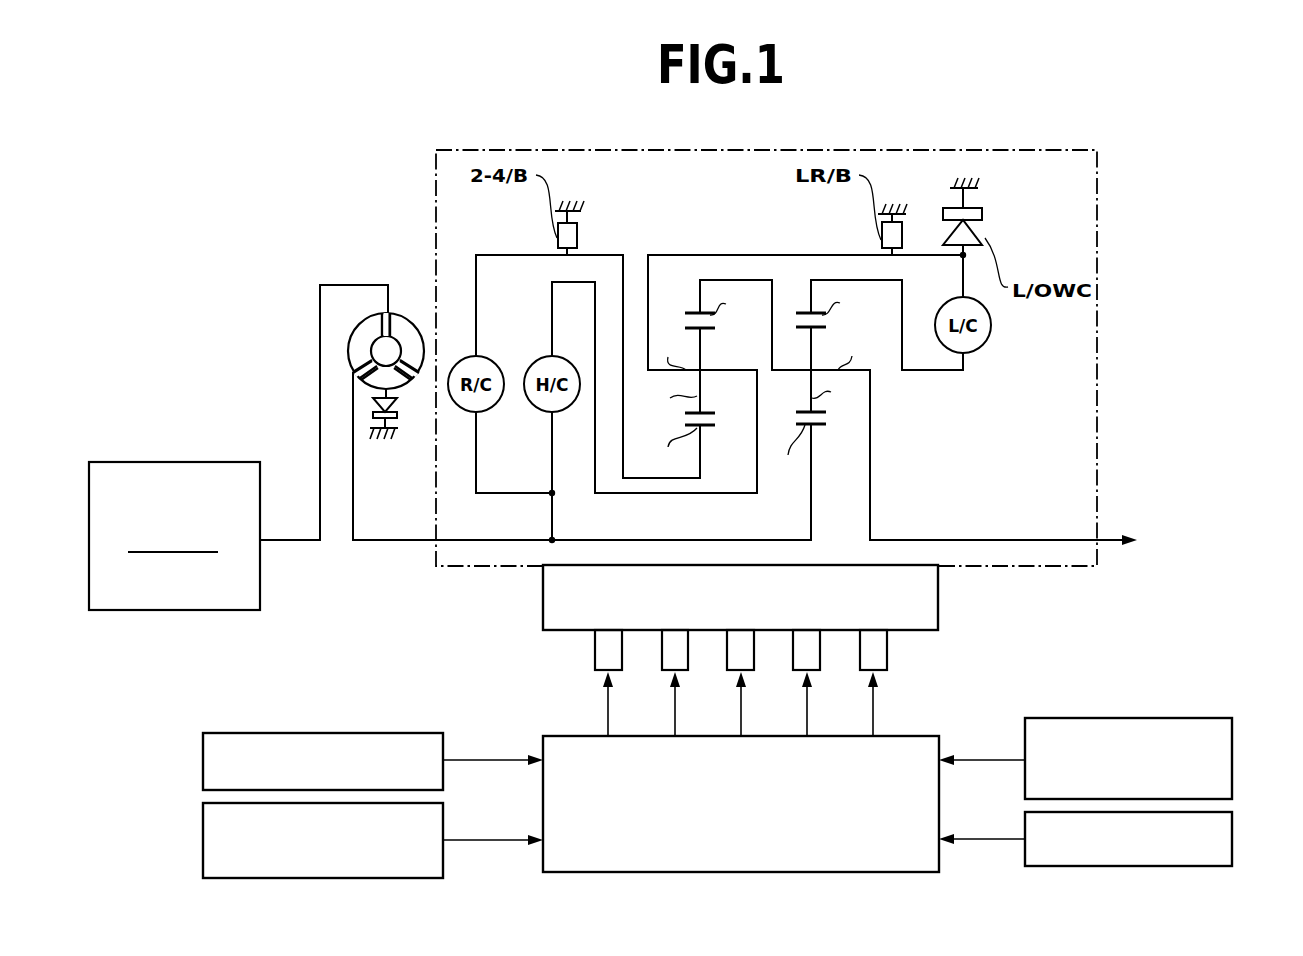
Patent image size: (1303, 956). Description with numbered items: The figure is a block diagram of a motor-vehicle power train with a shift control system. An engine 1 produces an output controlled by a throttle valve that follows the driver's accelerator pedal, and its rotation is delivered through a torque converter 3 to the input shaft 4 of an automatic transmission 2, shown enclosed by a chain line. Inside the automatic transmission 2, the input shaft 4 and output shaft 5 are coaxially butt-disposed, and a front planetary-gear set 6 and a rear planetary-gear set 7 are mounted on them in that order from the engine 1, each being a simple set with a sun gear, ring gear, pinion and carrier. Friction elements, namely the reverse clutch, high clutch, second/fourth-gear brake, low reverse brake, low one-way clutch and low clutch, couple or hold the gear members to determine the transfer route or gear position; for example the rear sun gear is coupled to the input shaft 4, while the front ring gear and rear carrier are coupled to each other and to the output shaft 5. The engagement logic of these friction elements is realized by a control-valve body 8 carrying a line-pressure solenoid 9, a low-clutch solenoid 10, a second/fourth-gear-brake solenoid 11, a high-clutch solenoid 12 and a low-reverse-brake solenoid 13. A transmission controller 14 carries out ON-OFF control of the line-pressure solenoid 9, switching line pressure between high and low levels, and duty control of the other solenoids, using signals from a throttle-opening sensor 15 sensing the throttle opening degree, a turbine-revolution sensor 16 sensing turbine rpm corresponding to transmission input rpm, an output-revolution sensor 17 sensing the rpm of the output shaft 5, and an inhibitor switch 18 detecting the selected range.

The engine 1 is at (155, 462).
The automatic transmission 2 is at (1104, 208).
The torque converter 3 is at (404, 300).
The input shaft 4 is at (383, 541).
The output shaft 5 is at (943, 539).
The front planetary-gear set 6 is at (691, 270).
The rear planetary-gear set 7 is at (795, 265).
The control-valve body 8 is at (938, 602).
The line-pressure solenoid 9 is at (597, 656).
The low-clutch solenoid 10 is at (664, 656).
The second/fourth-gear-brake solenoid 11 is at (729, 656).
The high-clutch solenoid 12 is at (795, 656).
The low-reverse-brake solenoid 13 is at (862, 656).
The transmission controller 14 is at (920, 736).
The throttle-opening sensor 15 is at (203, 758).
The turbine-revolution sensor 16 is at (203, 838).
The output-revolution sensor 17 is at (1232, 758).
The inhibitor switch 18 is at (1232, 837).